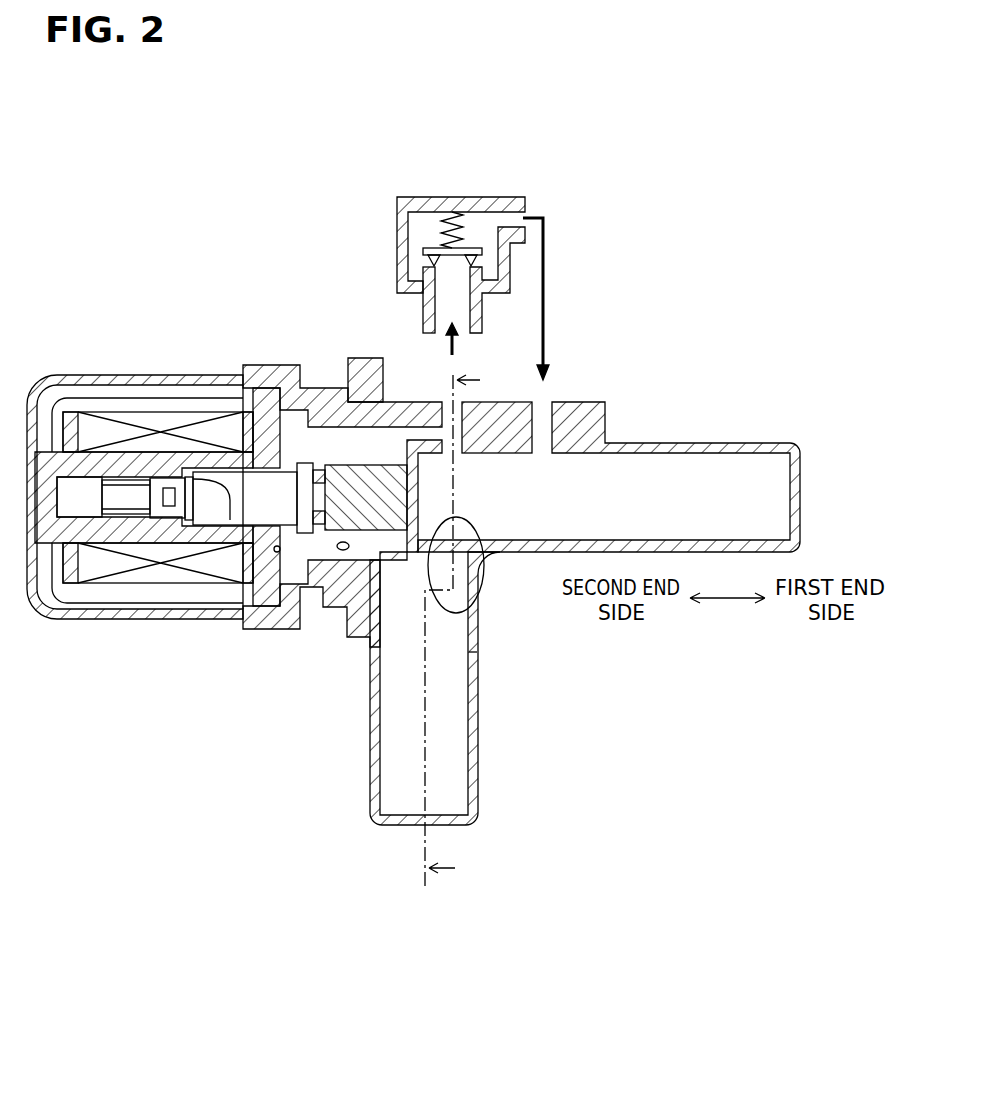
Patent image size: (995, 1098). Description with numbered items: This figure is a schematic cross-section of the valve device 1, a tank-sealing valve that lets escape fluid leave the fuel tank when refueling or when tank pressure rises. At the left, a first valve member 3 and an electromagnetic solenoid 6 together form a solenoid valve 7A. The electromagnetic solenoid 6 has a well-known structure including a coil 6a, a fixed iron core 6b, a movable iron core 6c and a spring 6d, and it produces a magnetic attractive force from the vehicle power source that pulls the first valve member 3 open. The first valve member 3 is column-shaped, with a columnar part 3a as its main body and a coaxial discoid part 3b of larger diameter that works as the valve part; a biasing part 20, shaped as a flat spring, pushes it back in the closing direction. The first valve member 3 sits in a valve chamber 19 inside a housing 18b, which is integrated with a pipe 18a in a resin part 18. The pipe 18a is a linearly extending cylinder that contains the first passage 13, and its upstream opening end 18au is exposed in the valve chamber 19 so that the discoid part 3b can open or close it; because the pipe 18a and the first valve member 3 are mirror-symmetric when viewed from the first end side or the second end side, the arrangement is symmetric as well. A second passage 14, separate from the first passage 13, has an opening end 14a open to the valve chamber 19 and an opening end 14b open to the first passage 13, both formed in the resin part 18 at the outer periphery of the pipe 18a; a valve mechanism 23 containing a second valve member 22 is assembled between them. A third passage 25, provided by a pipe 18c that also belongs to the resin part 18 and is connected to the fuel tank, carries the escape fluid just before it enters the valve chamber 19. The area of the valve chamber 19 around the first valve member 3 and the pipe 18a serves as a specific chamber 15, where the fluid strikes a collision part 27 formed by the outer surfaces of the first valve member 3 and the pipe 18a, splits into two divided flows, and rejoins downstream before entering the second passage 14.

The valve device 1 is at (702, 248).
The first valve member 3 is at (315, 300).
The collision part 27 is at (332, 425).
The columnar part 3a is at (310, 427).
The discoid part 3b is at (340, 452).
The specific chamber 15 is at (375, 358).
The electromagnetic solenoid 6 is at (232, 716).
The coil 6a is at (95, 567).
The fixed iron core 6b is at (126, 533).
The movable iron core 6c is at (202, 513).
The spring 6d is at (227, 527).
The solenoid valve 7A is at (90, 367).
The first passage 13 is at (492, 552).
The second passage 14 is at (462, 306).
The opening end 14a is at (450, 395).
The opening end 14b is at (543, 400).
The resin part 18 is at (602, 400).
The pipe 18a is at (470, 617).
The opening end 18au is at (402, 548).
The housing 18b is at (323, 570).
The pipe 18c is at (478, 710).
The valve chamber 19 is at (343, 548).
The biasing part 20 is at (277, 548).
The second valve member 22 is at (433, 252).
The valve mechanism 23 is at (475, 195).
The third passage 25 is at (468, 655).